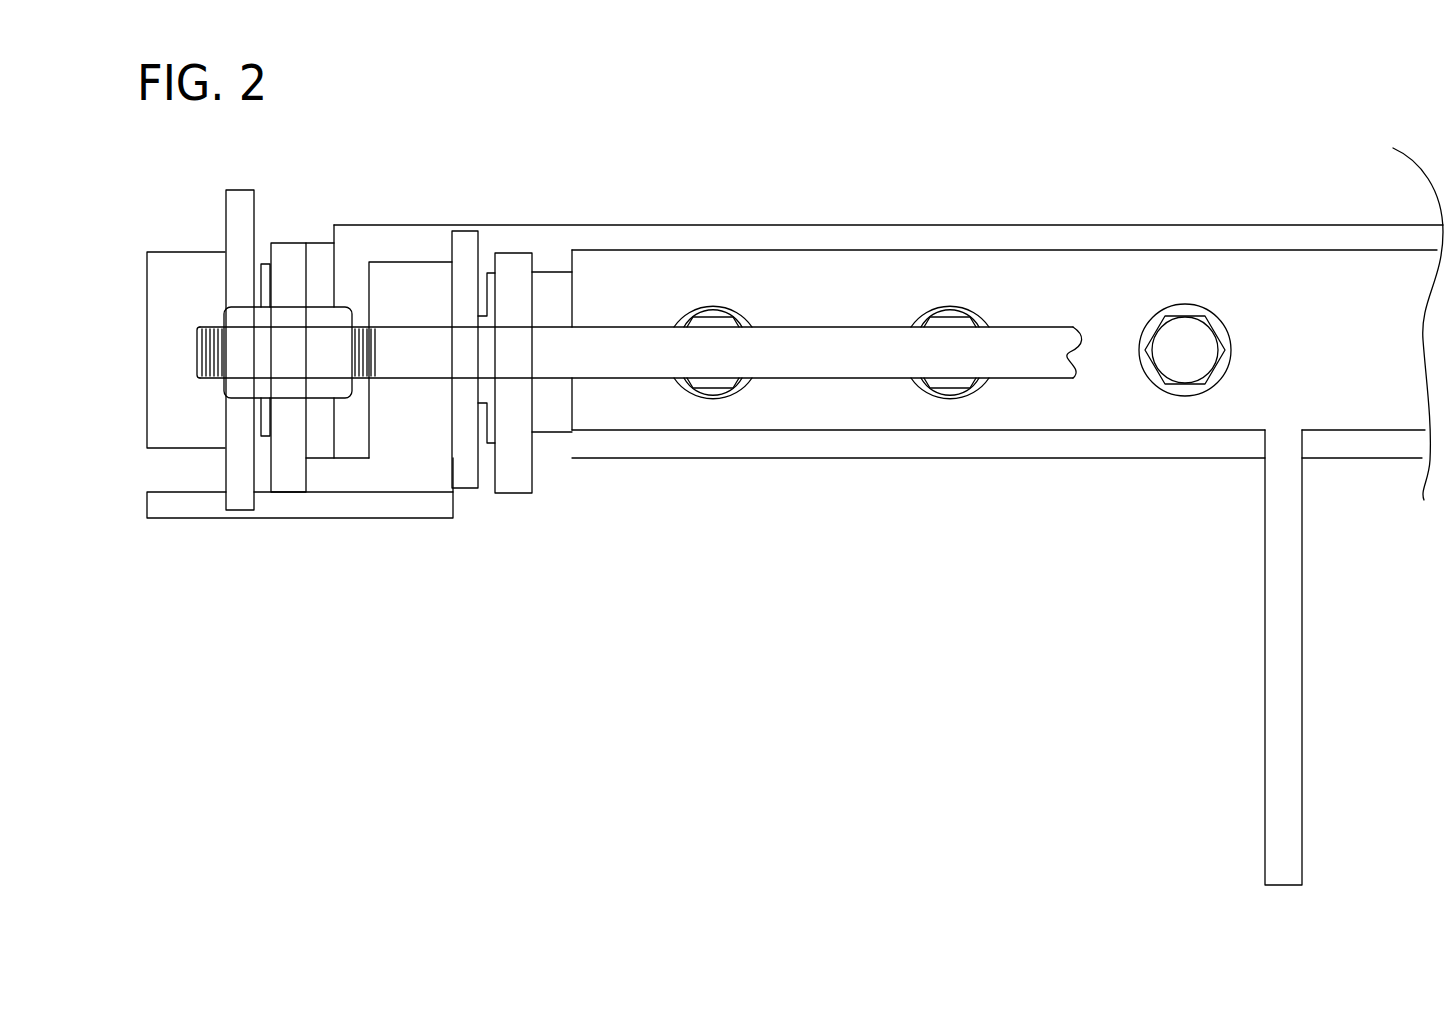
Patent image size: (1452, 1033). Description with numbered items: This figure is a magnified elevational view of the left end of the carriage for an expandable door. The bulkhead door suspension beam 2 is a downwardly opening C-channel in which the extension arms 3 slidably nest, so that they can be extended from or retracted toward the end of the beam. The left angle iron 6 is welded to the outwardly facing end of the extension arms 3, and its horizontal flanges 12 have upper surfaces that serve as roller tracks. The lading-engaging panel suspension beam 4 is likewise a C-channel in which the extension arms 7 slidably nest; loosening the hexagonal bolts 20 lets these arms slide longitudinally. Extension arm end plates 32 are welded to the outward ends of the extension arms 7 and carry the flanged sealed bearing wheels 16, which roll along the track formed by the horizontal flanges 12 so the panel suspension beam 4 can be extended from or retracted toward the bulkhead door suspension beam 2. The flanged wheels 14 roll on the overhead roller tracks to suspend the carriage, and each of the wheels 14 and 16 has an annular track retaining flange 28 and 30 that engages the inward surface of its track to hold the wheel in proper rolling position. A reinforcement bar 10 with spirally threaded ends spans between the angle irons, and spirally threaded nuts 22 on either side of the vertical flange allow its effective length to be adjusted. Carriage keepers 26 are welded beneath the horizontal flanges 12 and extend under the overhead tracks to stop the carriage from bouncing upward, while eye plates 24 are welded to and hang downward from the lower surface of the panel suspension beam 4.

The bulkhead door suspension beam 2 is at (622, 233).
The extension arms 3 is at (322, 438).
The lading-engaging panel suspension beam 4 is at (817, 412).
The left angle iron 6 is at (283, 260).
The extension arms 7 is at (548, 405).
The reinforcement bar 10 is at (637, 350).
The horizontal flanges 12 is at (352, 475).
The flanged wheels 14 is at (157, 270).
The flanged sealed bearing wheels 16 is at (380, 272).
The hexagonal bolts 20 is at (1183, 327).
The spirally threaded nuts 22 is at (243, 358).
The eye plates 24 is at (1283, 632).
The carriage keepers 26 is at (165, 510).
The annular track retaining flange 28 is at (240, 203).
The annular track retaining flange 30 is at (465, 243).
The extension arm end plates 32 is at (512, 463).